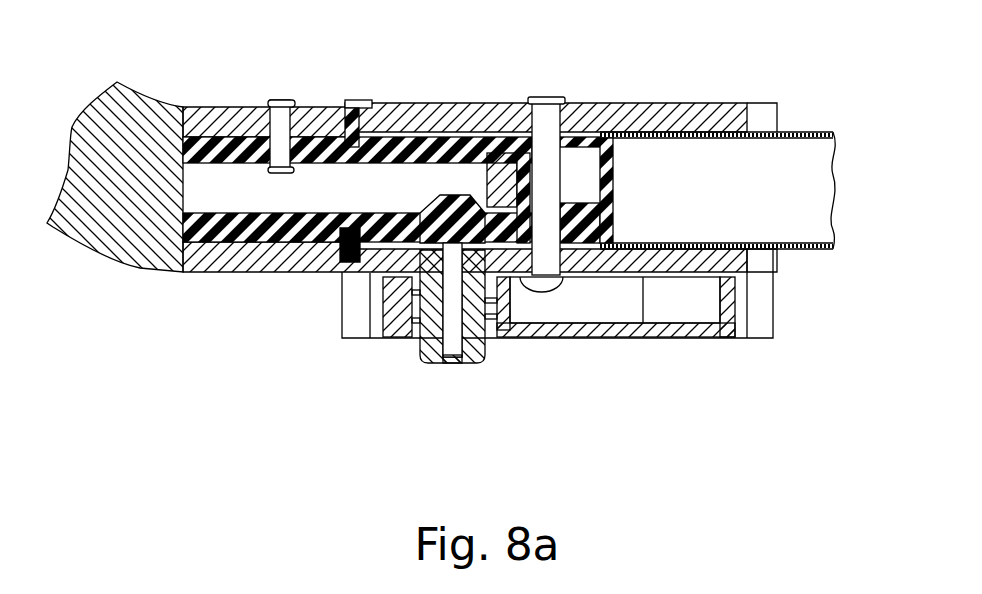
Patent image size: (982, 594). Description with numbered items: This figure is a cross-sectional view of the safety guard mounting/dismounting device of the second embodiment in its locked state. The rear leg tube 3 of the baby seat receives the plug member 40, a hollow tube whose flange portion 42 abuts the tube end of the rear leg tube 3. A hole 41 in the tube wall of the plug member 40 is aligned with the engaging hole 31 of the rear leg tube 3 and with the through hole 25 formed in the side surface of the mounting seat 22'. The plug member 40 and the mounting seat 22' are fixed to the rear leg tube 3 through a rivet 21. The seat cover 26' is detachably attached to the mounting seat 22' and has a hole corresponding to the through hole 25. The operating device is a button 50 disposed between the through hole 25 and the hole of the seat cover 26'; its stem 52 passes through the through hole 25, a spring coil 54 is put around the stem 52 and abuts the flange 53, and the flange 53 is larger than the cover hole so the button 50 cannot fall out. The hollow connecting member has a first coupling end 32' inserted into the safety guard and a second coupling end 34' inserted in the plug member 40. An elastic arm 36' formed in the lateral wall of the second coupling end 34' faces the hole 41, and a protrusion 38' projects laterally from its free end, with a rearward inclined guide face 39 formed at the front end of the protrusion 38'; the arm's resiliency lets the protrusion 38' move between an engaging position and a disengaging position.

The rear leg tube 3 is at (800, 122).
The rivet 21 is at (548, 97).
The mounting seat 22' is at (480, 144).
The through hole 25 is at (418, 255).
The seat cover 26' is at (557, 335).
The engaging hole 31 is at (615, 232).
The first coupling end 32' is at (123, 221).
The second coupling end 34' is at (391, 88).
The elastic arm 36' is at (391, 282).
The protrusion 38' is at (479, 111).
The seal ring 39 is at (472, 200).
The plug member 40 is at (365, 100).
The hole 41 is at (527, 107).
The flange portion 42 is at (337, 100).
The button 50 is at (460, 378).
The stem 52 is at (280, 98).
The flange 53 is at (405, 340).
The spring coil 54 is at (503, 338).